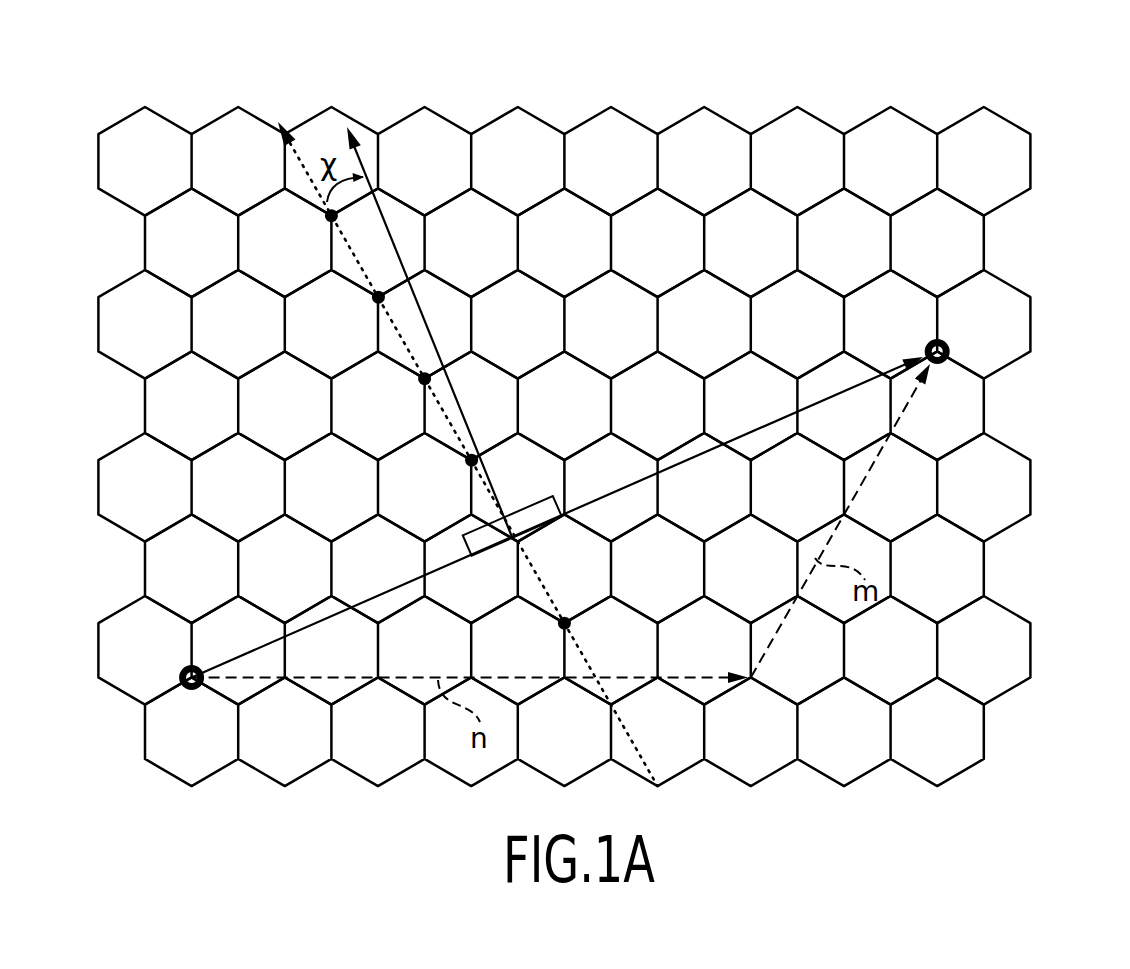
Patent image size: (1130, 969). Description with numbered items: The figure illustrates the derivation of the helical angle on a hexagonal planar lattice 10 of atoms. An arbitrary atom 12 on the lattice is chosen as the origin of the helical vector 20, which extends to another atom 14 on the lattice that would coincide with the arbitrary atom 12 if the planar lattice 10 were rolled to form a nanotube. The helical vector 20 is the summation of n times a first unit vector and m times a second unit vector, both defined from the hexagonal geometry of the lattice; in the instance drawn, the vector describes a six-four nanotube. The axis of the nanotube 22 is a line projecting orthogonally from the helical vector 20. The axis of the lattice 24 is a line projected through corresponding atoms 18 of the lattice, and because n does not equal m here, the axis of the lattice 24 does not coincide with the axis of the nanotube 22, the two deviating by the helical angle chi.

The planar lattice 10 is at (1028, 503).
The arbitrary atom 12 is at (192, 688).
The another atom 14 is at (943, 343).
The corresponding atoms 18 is at (378, 298).
The helical vector 20 is at (768, 428).
The axis of the nanotube 22 is at (386, 224).
The axis of the lattice 24 is at (303, 180).